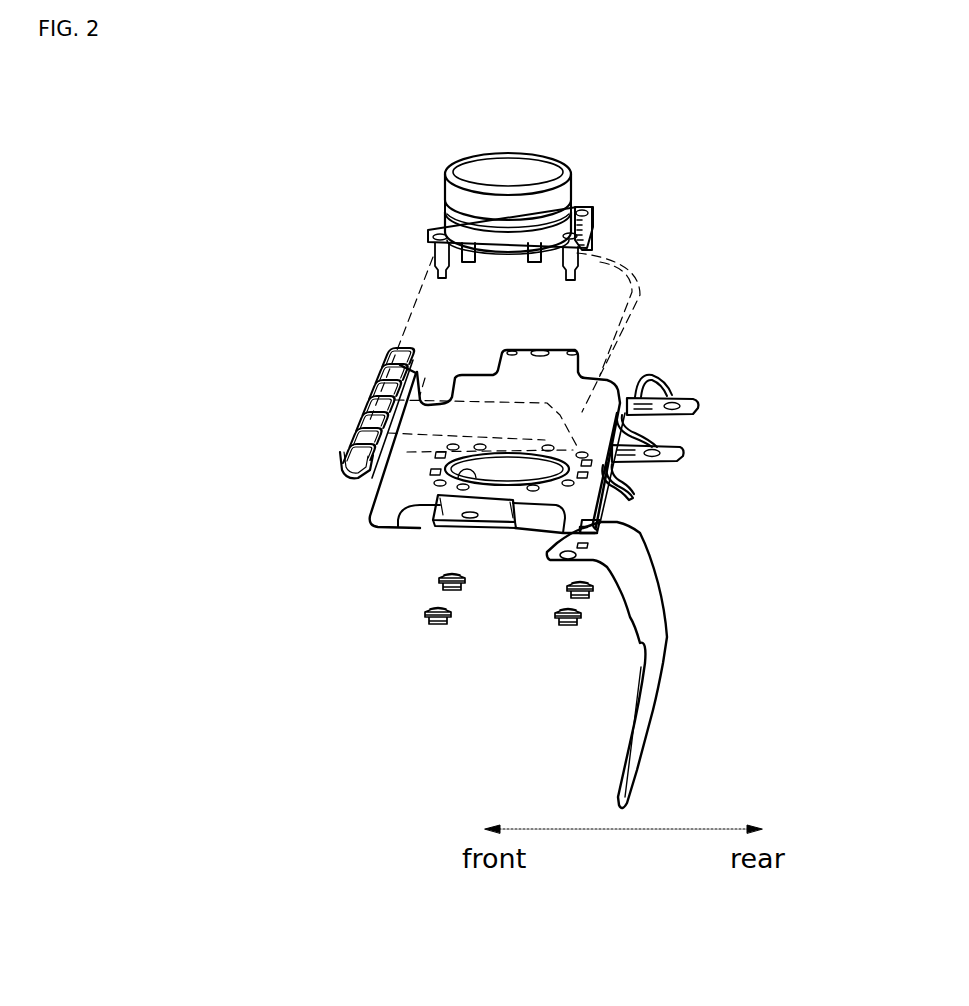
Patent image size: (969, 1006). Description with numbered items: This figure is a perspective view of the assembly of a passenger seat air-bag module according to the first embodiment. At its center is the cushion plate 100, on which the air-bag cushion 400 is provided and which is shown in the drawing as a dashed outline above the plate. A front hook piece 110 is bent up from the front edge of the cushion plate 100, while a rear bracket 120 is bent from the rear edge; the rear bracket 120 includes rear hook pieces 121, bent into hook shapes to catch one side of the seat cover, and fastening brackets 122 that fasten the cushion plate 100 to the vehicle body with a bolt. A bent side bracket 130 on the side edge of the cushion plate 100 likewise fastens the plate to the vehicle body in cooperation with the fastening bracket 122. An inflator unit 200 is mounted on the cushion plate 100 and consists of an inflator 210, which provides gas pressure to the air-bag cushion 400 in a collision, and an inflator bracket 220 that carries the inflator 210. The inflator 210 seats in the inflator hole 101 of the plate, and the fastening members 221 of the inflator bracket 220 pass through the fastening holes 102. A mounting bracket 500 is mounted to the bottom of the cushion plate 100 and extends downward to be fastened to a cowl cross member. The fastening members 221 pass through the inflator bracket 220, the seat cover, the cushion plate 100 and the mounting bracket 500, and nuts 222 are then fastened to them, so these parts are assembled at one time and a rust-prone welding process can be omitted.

The cushion plate 100 is at (405, 483).
The inflator hole 101 is at (467, 470).
The fastening holes 102 is at (560, 535).
The front hook piece 110 is at (345, 450).
The rear bracket 120 is at (800, 481).
The rear hook piece 121 is at (640, 489).
The fastening bracket 122 is at (680, 450).
The side bracket 130 is at (487, 508).
The inflator unit 200 is at (586, 173).
The inflator 210 is at (525, 167).
The inflator bracket 220 is at (593, 213).
The fastening members 221 is at (577, 259).
The nuts 222 is at (427, 617).
The air-bag cushion 400 is at (630, 320).
The mounting bracket 500 is at (653, 620).